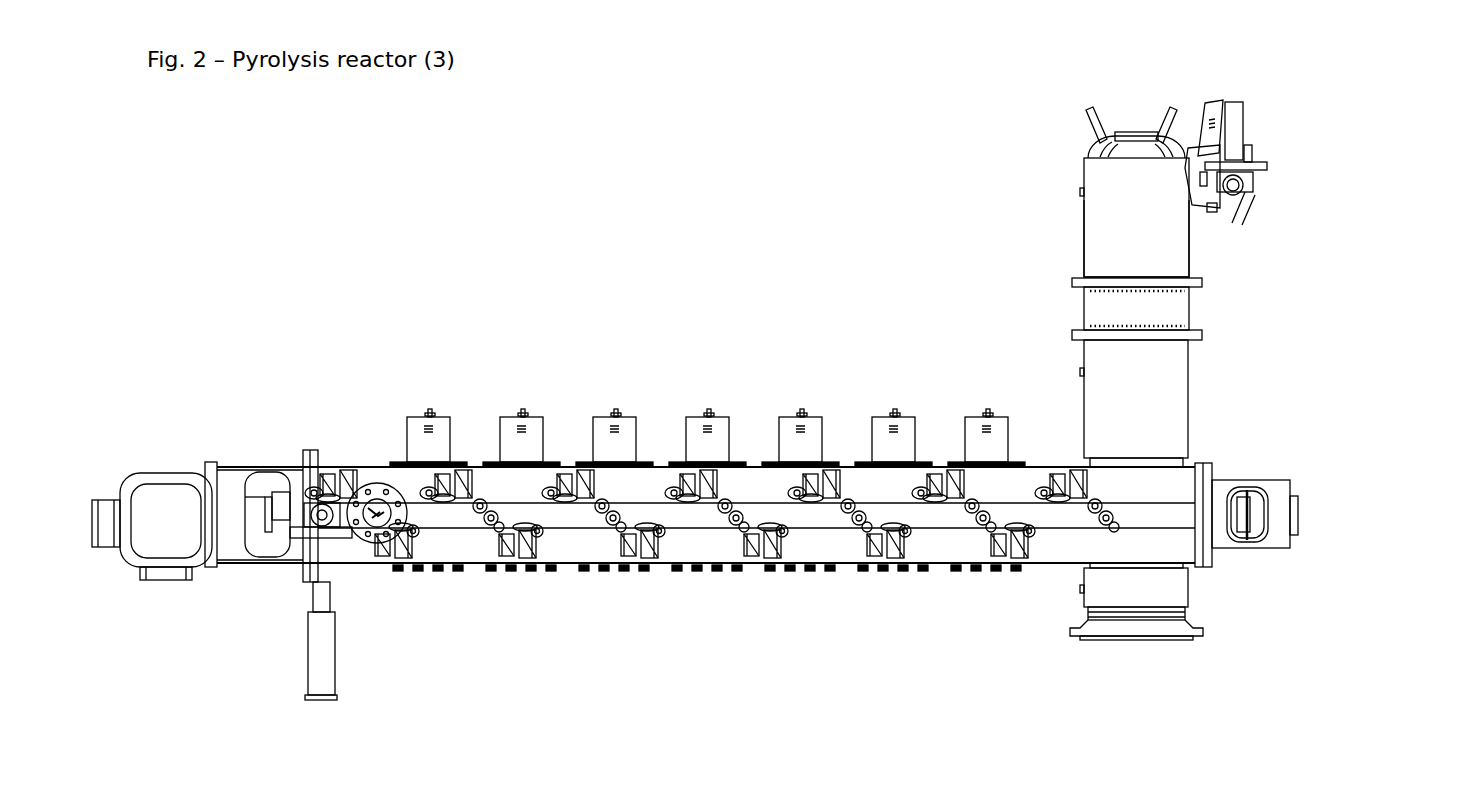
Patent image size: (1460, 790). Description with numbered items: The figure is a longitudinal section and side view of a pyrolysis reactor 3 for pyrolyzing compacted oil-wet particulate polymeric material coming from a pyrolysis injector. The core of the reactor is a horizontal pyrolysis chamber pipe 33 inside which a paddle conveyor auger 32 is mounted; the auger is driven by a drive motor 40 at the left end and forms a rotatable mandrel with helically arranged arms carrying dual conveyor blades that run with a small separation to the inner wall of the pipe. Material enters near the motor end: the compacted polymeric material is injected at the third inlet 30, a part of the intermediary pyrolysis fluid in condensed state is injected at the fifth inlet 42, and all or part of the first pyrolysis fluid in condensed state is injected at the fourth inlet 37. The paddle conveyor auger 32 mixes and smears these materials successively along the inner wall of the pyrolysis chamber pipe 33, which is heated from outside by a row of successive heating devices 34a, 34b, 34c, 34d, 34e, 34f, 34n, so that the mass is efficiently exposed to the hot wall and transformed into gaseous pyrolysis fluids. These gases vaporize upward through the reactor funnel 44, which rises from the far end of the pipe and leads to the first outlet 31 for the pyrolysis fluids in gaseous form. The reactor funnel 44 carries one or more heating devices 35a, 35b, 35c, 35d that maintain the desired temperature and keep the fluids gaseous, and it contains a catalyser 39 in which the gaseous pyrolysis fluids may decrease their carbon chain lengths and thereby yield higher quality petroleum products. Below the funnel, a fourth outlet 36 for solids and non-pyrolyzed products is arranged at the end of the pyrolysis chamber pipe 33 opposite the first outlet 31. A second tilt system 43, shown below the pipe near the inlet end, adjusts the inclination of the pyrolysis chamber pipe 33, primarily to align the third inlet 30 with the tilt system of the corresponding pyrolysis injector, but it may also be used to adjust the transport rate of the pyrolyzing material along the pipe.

The pyrolysis reactor 3 is at (735, 237).
The third inlet 30 is at (408, 542).
The first outlet 31 is at (1247, 197).
The paddle conveyor auger 32 is at (910, 602).
The pyrolysis chamber pipe 33 is at (567, 568).
The successive heating device 34a is at (436, 412).
The successive heating device 34b is at (529, 412).
The successive heating device 34c is at (622, 412).
The successive heating device 34d is at (715, 412).
The successive heating device 34e is at (808, 412).
The successive heating device 34f is at (901, 412).
The successive heating device 34n is at (994, 412).
The heating device 35a is at (1213, 100).
The heating device 35b is at (1190, 263).
The heating device 35c is at (1190, 420).
The heating device 35d is at (1190, 595).
The fourth outlet 36 is at (1155, 638).
The fourth inlet 37 is at (343, 465).
The catalyser 39 is at (1330, 285).
The drive motor 40 is at (152, 471).
The fifth inlet 42 is at (378, 465).
The second tilt system 43 is at (510, 632).
The reactor funnel 44 is at (1108, 257).